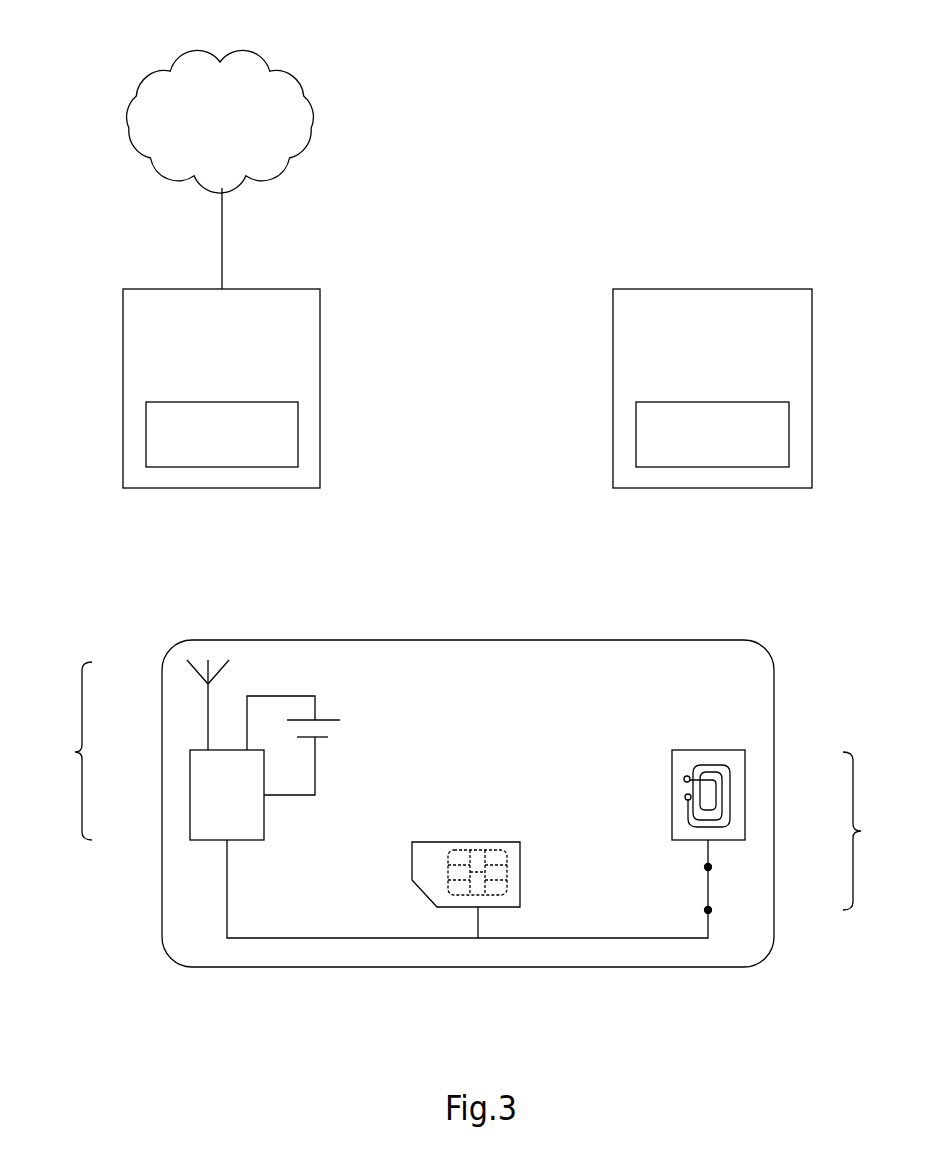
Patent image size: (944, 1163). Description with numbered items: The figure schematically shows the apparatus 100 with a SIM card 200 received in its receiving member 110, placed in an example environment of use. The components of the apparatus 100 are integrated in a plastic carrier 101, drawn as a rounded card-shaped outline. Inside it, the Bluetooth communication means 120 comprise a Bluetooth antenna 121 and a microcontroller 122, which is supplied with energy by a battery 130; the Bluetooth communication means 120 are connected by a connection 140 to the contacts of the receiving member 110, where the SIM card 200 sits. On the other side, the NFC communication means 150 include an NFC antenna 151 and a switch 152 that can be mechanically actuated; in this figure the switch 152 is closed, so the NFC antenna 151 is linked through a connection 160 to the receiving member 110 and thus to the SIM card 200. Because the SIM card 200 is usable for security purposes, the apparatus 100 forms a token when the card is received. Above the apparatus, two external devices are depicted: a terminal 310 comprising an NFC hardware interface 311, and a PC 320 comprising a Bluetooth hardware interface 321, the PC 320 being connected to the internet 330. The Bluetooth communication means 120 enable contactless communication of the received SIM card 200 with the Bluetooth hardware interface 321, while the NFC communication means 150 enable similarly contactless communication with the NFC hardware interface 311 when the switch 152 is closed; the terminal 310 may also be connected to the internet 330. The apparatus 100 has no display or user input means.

The apparatus 100 is at (580, 641).
The plastic carrier 101 is at (457, 660).
The receiving member 110 is at (492, 842).
The Bluetooth communication means 120 is at (146, 750).
The Bluetooth antenna 121 is at (200, 676).
The microcontroller 122 is at (190, 793).
The battery 130 is at (330, 720).
The connection 140 is at (342, 938).
The NFC communication means 150 is at (791, 832).
The NFC antenna 151 is at (745, 798).
The switch 152 is at (718, 884).
The connection 160 is at (594, 938).
The SIM card 200 is at (433, 852).
The terminal 310 is at (783, 288).
The NFC hardware interface 311 is at (789, 423).
The PC 320 is at (293, 288).
The Bluetooth hardware interface 321 is at (298, 423).
The internet 330 is at (281, 54).